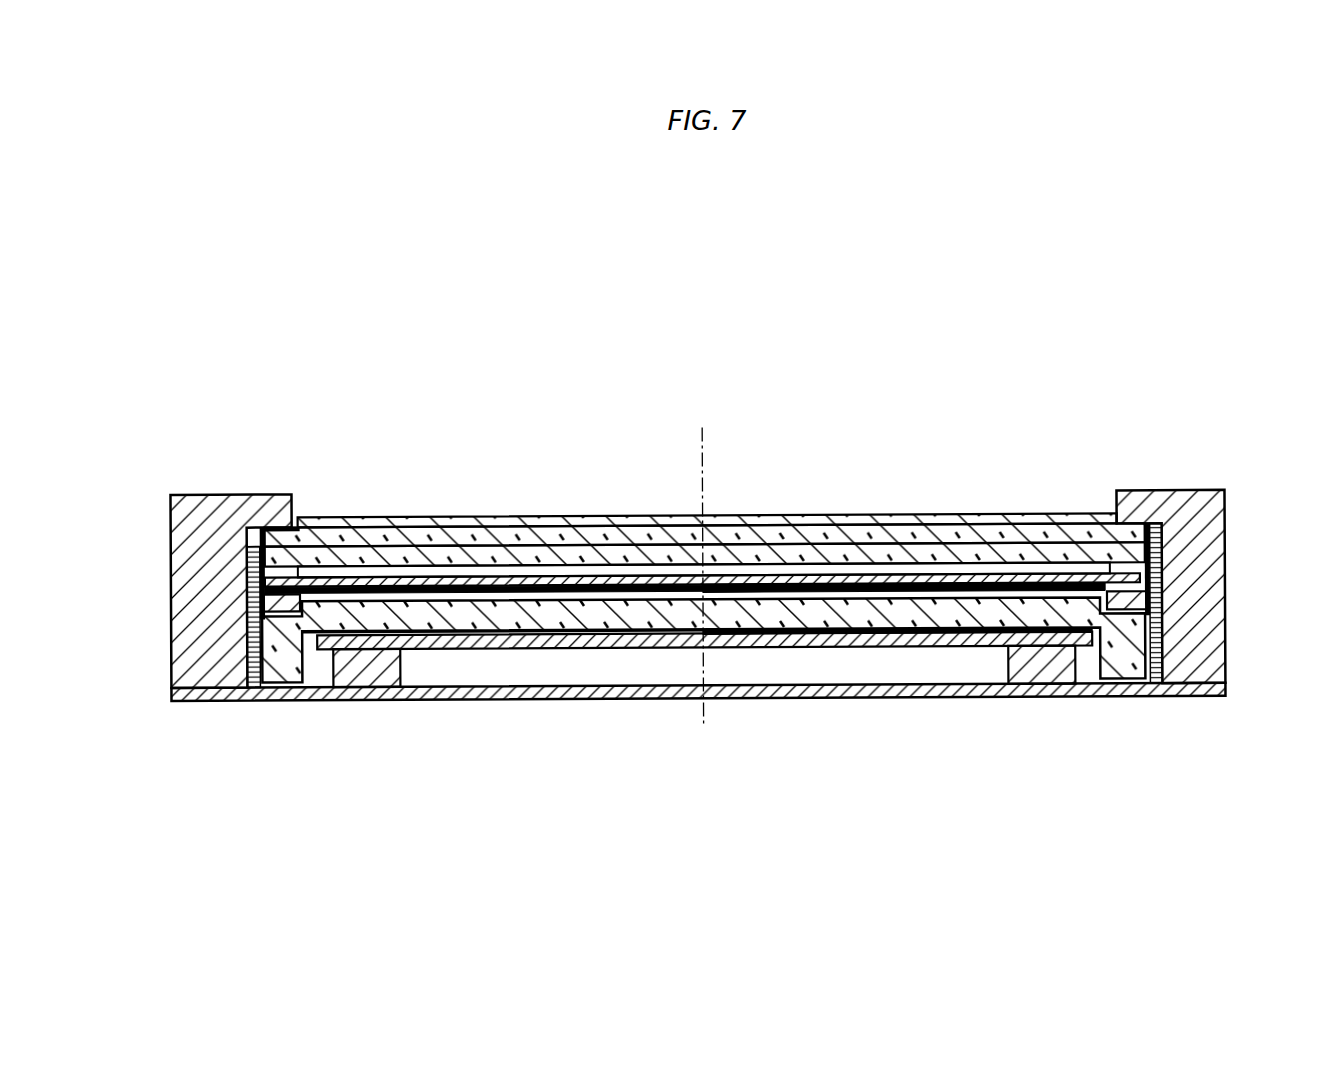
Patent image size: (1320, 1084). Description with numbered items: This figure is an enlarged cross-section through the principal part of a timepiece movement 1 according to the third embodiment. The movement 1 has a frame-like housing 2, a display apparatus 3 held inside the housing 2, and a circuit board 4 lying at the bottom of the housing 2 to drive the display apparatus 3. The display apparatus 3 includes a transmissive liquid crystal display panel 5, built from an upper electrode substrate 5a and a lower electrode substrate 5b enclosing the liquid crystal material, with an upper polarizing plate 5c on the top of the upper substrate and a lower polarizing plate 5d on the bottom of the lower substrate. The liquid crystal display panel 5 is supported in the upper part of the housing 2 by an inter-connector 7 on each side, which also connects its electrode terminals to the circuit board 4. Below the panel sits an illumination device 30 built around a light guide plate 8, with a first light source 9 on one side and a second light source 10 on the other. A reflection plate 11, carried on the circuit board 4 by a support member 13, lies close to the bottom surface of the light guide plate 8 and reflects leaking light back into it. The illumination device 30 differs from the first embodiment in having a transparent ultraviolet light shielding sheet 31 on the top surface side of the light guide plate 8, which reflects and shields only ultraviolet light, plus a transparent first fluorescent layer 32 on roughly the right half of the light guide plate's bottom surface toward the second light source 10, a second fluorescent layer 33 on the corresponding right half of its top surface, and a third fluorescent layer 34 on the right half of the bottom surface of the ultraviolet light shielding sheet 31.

The movement 1 is at (190, 468).
The housing 2 is at (218, 570).
The display apparatus 3 is at (704, 404).
The circuit board 4 is at (645, 695).
The liquid crystal display panel 5 is at (704, 440).
The upper electrode substrate 5a is at (918, 538).
The lower electrode substrate 5b is at (965, 558).
The upper polarizing plate 5c is at (867, 517).
The lower polarizing plate 5d is at (1008, 582).
The inter-connector 7 is at (245, 643).
The light guide plate 8 is at (632, 614).
The first light source 9 is at (288, 596).
The second light source 10 is at (1112, 595).
The reflection plate 11 is at (563, 642).
The support member 13 is at (366, 670).
The illumination device 30 is at (625, 575).
The ultraviolet light shielding sheet 31 is at (825, 580).
The first fluorescent layer 32 is at (835, 632).
The second fluorescent layer 33 is at (890, 602).
The third fluorescent layer 34 is at (920, 596).